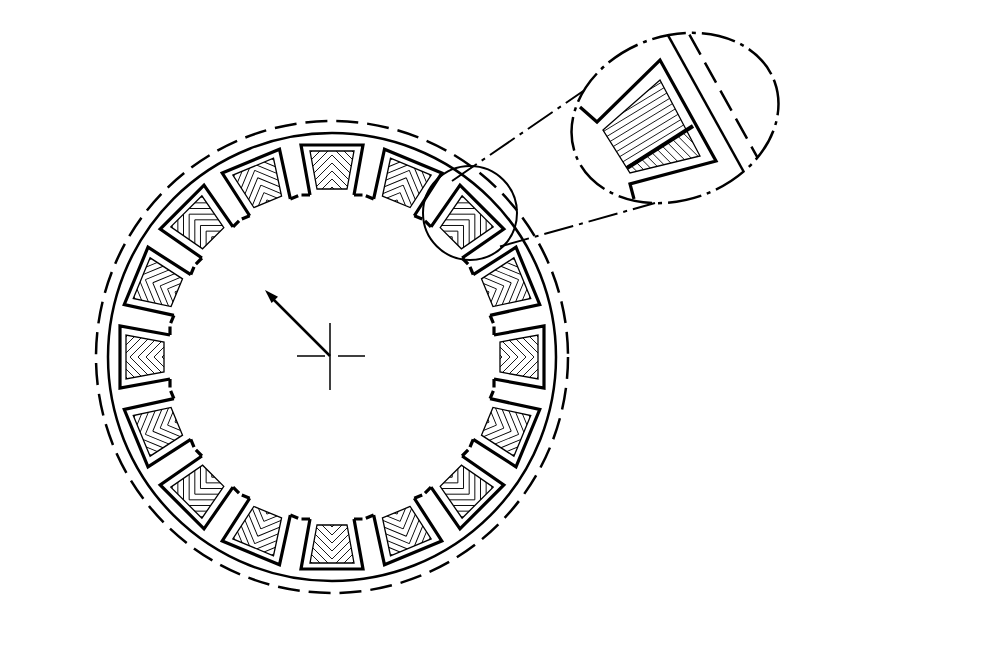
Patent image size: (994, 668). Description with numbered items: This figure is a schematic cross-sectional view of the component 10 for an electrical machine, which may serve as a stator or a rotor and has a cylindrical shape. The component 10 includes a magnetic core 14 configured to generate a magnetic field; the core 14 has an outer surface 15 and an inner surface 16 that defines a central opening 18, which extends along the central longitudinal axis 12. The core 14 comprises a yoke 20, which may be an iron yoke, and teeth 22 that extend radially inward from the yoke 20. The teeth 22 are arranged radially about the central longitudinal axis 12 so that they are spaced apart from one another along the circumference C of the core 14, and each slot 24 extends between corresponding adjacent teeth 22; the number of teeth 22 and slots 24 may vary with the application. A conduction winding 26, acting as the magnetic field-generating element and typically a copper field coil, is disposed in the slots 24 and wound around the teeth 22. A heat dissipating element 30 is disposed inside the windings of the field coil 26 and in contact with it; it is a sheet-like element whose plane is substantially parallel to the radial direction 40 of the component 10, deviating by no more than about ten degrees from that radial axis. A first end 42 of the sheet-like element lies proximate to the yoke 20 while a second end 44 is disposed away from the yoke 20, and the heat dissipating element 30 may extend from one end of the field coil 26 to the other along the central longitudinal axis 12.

The component 10 is at (156, 68).
The central longitudinal axis 12 is at (350, 353).
The core 14 is at (200, 166).
The outer surface 15 is at (388, 143).
The inner surface 16 is at (152, 248).
The central opening 18 is at (410, 409).
The yoke 20 is at (243, 157).
The teeth 22 is at (495, 471).
The slots 24 is at (366, 500).
The conduction winding 26 is at (476, 516).
The heat dissipating element 30 is at (700, 166).
The radial direction 40 is at (302, 325).
The first end 42 is at (685, 135).
The second end 44 is at (626, 170).
The circumference C is at (330, 118).